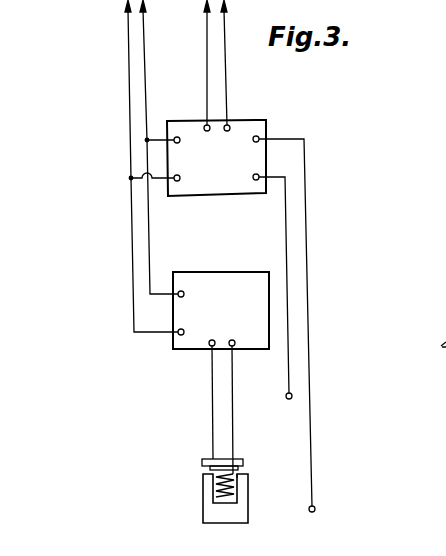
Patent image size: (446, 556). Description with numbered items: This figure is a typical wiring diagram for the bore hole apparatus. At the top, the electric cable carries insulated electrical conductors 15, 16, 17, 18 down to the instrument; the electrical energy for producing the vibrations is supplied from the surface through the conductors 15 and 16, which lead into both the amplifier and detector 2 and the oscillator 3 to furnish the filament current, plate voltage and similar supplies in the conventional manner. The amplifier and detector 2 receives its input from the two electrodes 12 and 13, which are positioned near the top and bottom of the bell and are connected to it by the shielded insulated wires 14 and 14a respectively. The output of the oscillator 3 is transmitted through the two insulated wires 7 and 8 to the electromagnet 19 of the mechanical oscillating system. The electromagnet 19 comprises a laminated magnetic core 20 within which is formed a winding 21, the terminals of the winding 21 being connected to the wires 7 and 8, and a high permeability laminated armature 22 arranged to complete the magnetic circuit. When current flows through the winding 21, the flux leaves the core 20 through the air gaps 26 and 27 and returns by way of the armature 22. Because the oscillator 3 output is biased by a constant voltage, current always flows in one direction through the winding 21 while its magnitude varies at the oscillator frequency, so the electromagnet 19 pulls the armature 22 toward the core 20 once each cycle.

The amplifier and detector 2 is at (238, 126).
The oscillator 3 is at (122, 272).
The insulated wire 7 is at (247, 376).
The insulated wire 8 is at (212, 398).
The electrode 12 is at (287, 398).
The electrode 13 is at (316, 508).
The shielded insulated wire 14 is at (288, 222).
The shielded insulated wire 14a is at (309, 250).
The insulated electrical conductor 15 is at (128, 68).
The insulated electrical conductor 16 is at (146, 52).
The insulated electrical conductor 17 is at (206, 68).
The insulated electrical conductor 18 is at (229, 80).
The electromagnet 19 is at (217, 489).
The laminated magnetic core 20 is at (237, 523).
The winding 21 is at (236, 487).
The laminated armature 22 is at (212, 459).
The air gap 26 is at (211, 471).
The air gap 27 is at (240, 476).